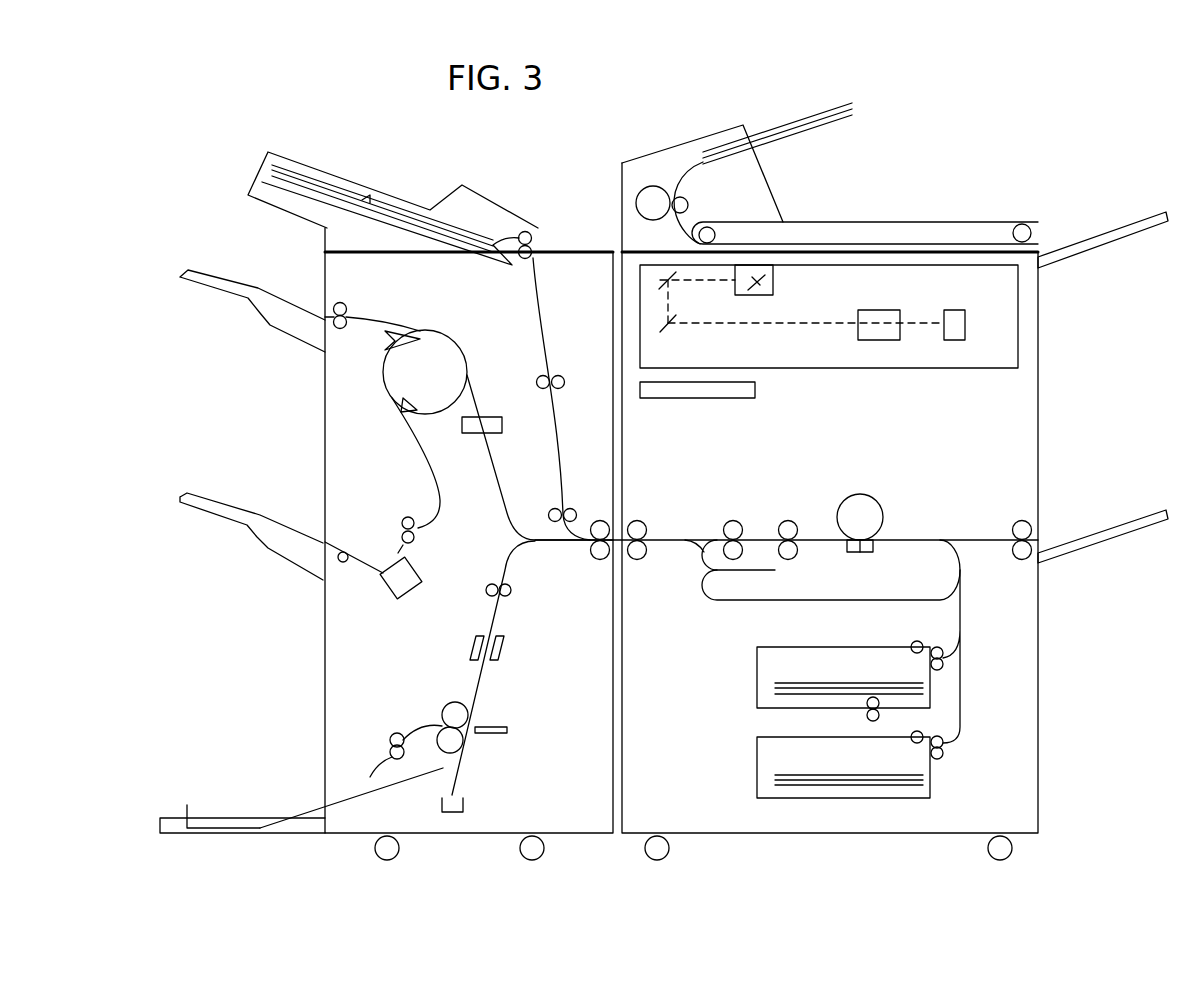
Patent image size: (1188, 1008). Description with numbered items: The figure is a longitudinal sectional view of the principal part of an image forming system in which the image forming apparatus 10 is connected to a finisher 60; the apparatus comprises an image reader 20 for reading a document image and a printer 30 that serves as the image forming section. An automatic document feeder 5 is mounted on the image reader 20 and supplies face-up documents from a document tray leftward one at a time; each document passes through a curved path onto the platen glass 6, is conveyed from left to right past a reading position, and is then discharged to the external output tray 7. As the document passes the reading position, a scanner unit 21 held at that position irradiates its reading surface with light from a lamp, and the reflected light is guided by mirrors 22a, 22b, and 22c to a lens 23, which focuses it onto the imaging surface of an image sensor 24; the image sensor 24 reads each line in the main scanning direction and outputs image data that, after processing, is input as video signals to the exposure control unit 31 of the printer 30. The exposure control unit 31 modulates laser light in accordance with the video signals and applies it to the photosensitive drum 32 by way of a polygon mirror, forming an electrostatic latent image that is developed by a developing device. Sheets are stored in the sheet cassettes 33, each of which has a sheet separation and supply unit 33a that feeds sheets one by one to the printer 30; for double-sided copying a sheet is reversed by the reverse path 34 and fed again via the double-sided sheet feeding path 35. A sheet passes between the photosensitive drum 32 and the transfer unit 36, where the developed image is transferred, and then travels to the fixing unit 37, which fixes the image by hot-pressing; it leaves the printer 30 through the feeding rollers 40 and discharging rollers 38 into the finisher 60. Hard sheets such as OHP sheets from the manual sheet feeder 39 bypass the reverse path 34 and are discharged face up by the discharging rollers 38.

The automatic document feeder 5 is at (673, 147).
The platen glass 6 is at (920, 250).
The external output tray 7 is at (1117, 231).
The image forming apparatus 10 is at (725, 827).
The image reader 20 is at (650, 267).
The scanner unit 21 is at (775, 277).
The mirror 22a is at (760, 284).
The mirror 22b is at (667, 280).
The mirror 22c is at (668, 322).
The lens 23 is at (890, 310).
The image sensor 24 is at (952, 310).
The printer 30 is at (899, 487).
The exposure control unit 31 is at (755, 388).
The photosensitive drum 32 is at (860, 494).
The sheet cassettes 33 is at (757, 672).
The sheet separation and supply unit 33a is at (910, 652).
The reverse path 34 is at (727, 573).
The double-sided sheet feeding path 35 is at (818, 598).
The transfer unit 36 is at (865, 554).
The fixing unit 37 is at (789, 520).
The discharging rollers 38 is at (637, 520).
The manual sheet feeder 39 is at (1117, 528).
The feeding rollers 40 is at (735, 520).
The finisher 60 is at (462, 825).